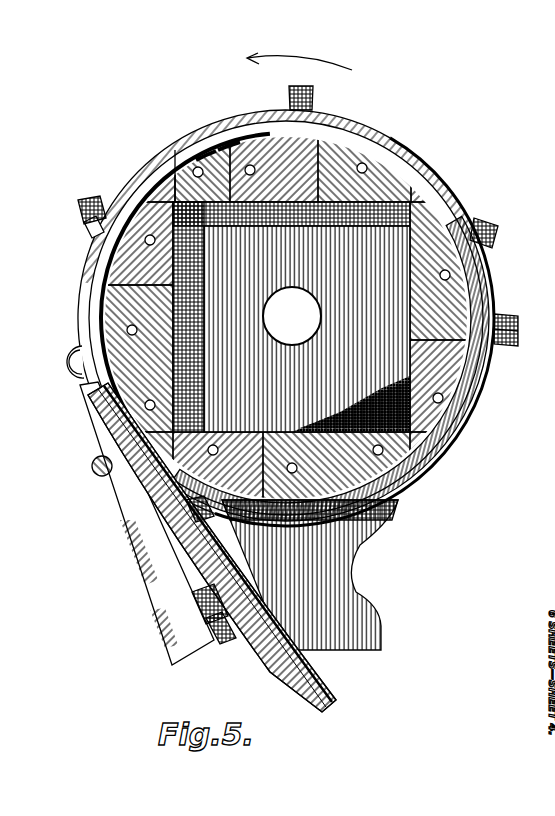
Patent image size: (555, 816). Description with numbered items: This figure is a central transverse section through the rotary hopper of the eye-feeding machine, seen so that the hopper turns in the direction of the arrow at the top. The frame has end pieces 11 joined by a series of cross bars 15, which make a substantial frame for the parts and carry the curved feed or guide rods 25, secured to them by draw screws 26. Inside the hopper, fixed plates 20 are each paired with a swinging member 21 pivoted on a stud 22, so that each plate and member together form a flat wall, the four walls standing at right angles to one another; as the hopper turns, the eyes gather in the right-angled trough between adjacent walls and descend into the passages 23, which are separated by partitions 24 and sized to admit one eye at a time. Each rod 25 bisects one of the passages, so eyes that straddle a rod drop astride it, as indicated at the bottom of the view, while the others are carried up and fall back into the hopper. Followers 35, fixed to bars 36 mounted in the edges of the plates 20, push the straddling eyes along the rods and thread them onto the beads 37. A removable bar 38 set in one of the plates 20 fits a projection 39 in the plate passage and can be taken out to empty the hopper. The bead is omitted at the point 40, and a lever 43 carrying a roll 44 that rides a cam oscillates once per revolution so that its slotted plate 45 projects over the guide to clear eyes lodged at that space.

The end pieces 11 is at (356, 572).
The cross bars 15 is at (310, 100).
The plates 20 is at (334, 122).
The swinging members 21 is at (400, 178).
The studs 22 is at (368, 142).
The passages 23 is at (162, 186).
The partitions 24 is at (174, 172).
The curved feed or guide rods 25 is at (402, 490).
The draw screws 26 is at (96, 192).
The followers 35 is at (202, 150).
The bars 36 is at (228, 140).
The beads 37 is at (208, 520).
The removable bar 38 is at (283, 128).
The projection 39 is at (291, 317).
The point 40 is at (262, 652).
The lever 43 is at (136, 574).
The roll 44 is at (72, 370).
The slotted plate 45 is at (216, 642).